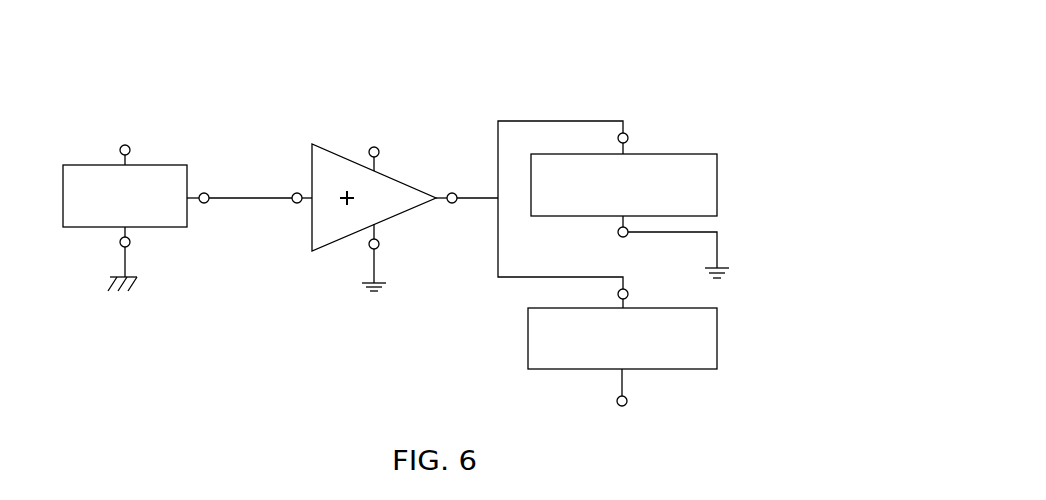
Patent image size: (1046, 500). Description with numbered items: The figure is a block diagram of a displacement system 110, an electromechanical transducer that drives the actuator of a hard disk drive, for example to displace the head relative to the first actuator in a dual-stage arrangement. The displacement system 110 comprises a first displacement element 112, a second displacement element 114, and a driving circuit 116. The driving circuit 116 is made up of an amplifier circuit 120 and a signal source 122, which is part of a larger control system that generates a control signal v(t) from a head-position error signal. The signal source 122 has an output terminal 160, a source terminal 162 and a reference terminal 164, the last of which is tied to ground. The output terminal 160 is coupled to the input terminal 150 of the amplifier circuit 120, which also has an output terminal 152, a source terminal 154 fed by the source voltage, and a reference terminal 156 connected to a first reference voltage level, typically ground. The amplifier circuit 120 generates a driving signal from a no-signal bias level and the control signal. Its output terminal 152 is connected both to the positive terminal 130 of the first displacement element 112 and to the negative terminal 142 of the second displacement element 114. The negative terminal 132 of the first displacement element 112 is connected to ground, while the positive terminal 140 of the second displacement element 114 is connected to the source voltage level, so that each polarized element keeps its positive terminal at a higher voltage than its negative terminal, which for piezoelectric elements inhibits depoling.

The displacement system 110 is at (640, 68).
The first displacement element 112 is at (718, 170).
The second displacement element 114 is at (645, 369).
The driving circuit 116 is at (227, 367).
The amplifier circuit 120 is at (393, 215).
The signal source 122 is at (98, 163).
The positive terminal 130 is at (627, 134).
The negative terminal 132 is at (625, 237).
The positive terminal 140 is at (617, 400).
The negative terminal 142 is at (628, 293).
The input terminal 150 is at (295, 203).
The output terminal 152 is at (453, 203).
The source terminal 154 is at (379, 155).
The reference terminal 156 is at (371, 249).
The output terminal 160 is at (204, 203).
The source terminal 162 is at (128, 146).
The reference terminal 164 is at (127, 247).